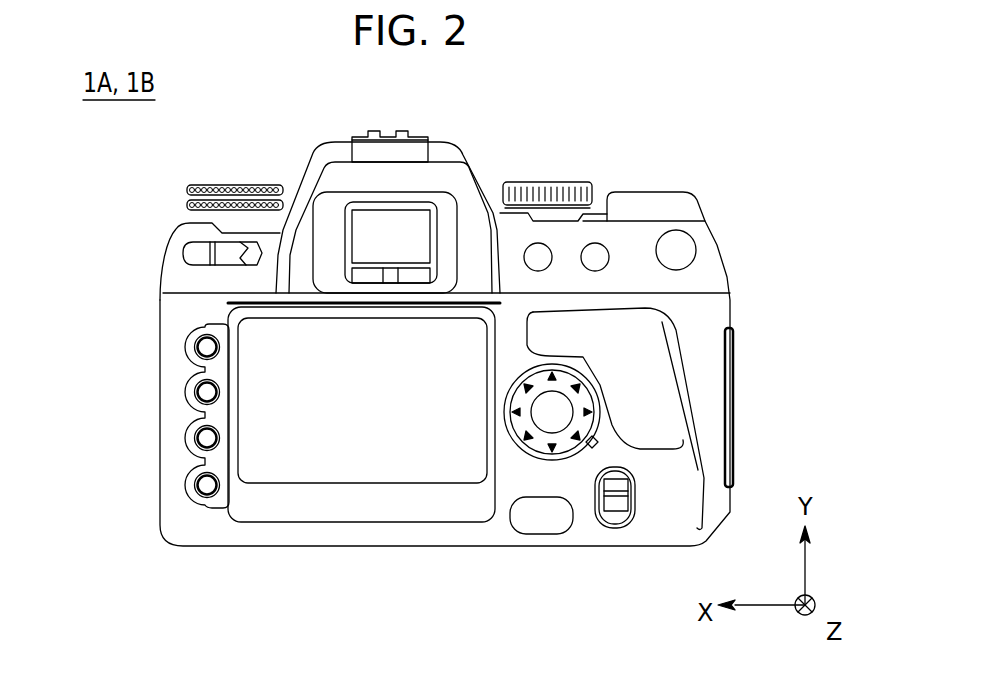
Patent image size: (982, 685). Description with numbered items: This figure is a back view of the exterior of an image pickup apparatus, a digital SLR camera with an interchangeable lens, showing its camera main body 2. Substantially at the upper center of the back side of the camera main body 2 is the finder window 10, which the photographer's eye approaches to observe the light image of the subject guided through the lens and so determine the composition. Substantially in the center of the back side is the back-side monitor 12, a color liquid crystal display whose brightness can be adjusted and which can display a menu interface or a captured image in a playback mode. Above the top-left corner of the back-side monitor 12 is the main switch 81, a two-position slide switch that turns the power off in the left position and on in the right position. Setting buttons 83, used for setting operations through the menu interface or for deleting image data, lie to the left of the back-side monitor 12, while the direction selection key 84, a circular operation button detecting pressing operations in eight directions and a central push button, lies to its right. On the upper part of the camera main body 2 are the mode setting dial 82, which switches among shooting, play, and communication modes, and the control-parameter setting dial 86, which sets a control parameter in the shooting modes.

The camera main body 2 is at (720, 307).
The finder window 10 is at (395, 230).
The back-side monitor 12 is at (322, 455).
The main switch 81 is at (192, 258).
The mode setting dial 82 is at (551, 182).
The setting buttons 83 is at (150, 327).
The direction selection key 84 is at (533, 458).
The control-parameter setting dial 86 is at (236, 184).